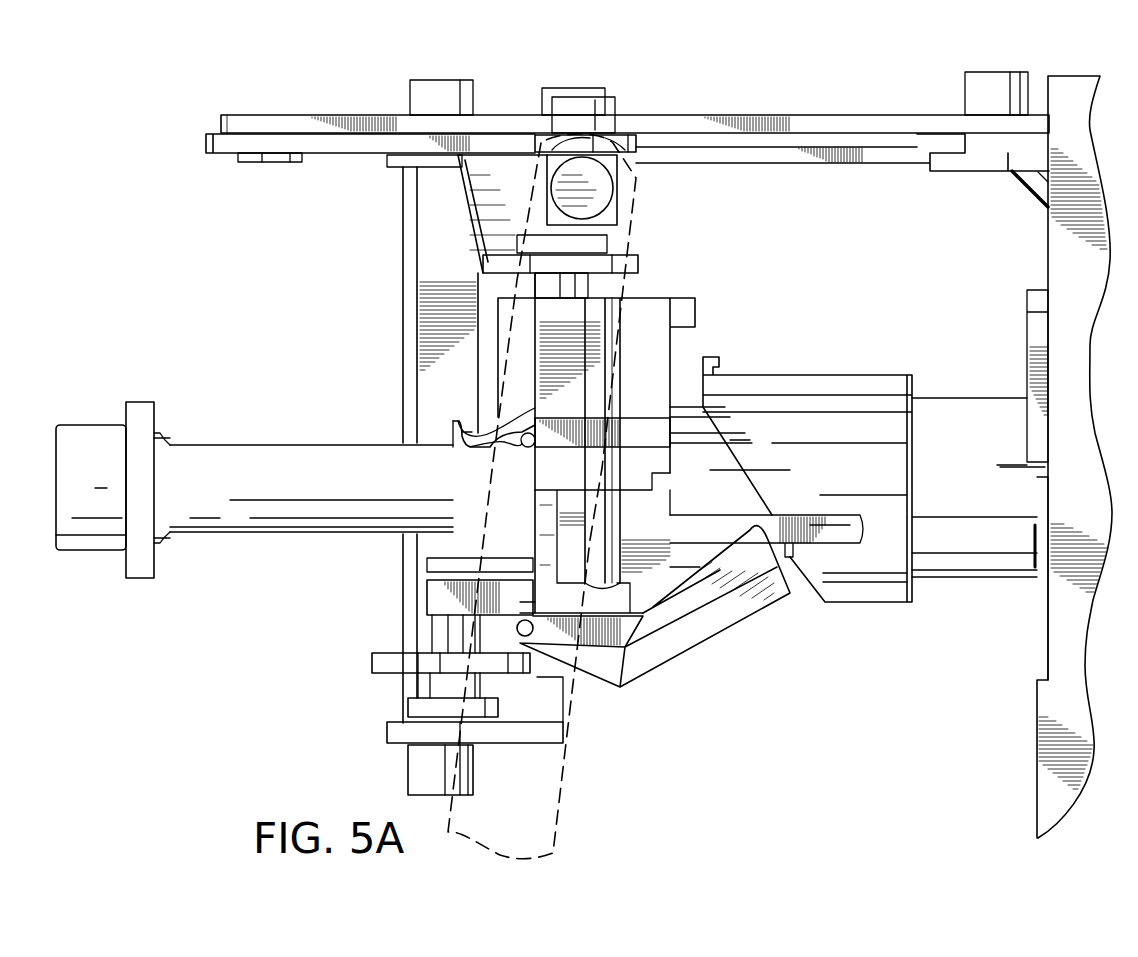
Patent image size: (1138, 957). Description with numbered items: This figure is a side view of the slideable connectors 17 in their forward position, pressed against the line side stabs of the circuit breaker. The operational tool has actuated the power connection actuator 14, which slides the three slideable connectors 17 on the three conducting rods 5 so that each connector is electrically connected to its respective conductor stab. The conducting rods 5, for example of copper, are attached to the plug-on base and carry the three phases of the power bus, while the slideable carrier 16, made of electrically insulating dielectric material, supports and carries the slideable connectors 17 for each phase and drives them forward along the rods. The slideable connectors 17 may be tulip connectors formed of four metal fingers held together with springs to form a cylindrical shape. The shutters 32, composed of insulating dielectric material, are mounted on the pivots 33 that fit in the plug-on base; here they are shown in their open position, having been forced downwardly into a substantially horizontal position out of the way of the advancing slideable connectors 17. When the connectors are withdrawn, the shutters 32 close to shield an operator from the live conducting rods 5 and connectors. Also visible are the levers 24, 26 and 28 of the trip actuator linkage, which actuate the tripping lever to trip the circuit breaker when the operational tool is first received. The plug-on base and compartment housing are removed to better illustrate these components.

The conducting rod 5 is at (95, 425).
The power connection actuator 14 is at (795, 165).
The slideable carrier 16 is at (653, 308).
The slideable connector 17 is at (450, 460).
The lever 24 is at (243, 115).
The lever 26 is at (332, 155).
The lever 28 is at (563, 778).
The shutter 32 is at (682, 657).
The pivot 33 is at (517, 626).